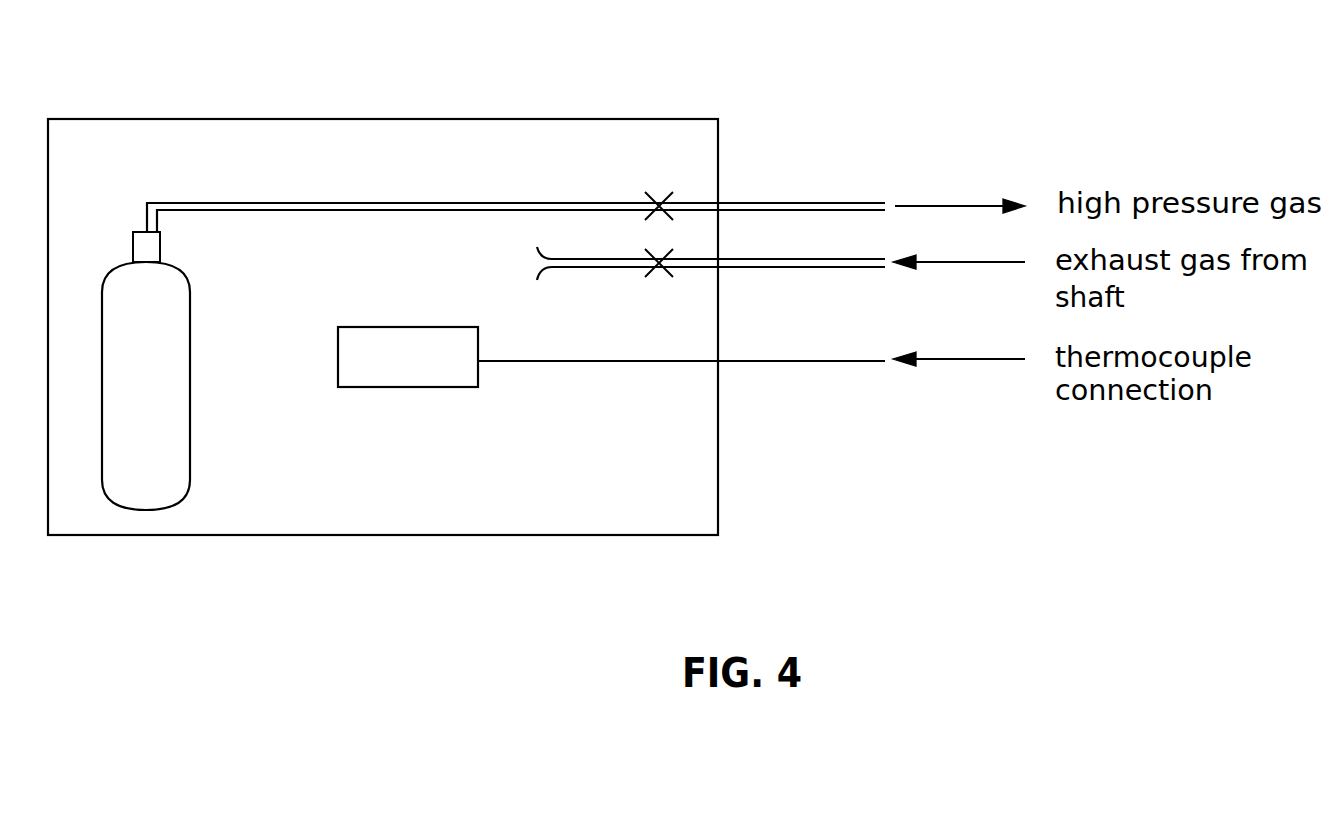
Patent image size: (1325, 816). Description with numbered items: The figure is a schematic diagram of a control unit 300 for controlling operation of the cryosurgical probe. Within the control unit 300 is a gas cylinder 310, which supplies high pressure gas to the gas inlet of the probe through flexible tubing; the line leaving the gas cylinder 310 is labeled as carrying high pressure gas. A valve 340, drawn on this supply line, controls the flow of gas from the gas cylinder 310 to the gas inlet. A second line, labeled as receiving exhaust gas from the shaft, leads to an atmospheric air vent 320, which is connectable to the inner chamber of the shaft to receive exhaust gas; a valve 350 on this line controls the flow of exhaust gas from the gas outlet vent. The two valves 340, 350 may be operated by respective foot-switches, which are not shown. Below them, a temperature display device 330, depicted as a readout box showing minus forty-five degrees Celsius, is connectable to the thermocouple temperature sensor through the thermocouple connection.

The control unit 300 is at (417, 119).
The gas cylinder 310 is at (192, 335).
The atmospheric air vent 320 is at (533, 263).
The temperature display device 330 is at (478, 372).
The valve 340 is at (659, 190).
The valve 350 is at (659, 278).